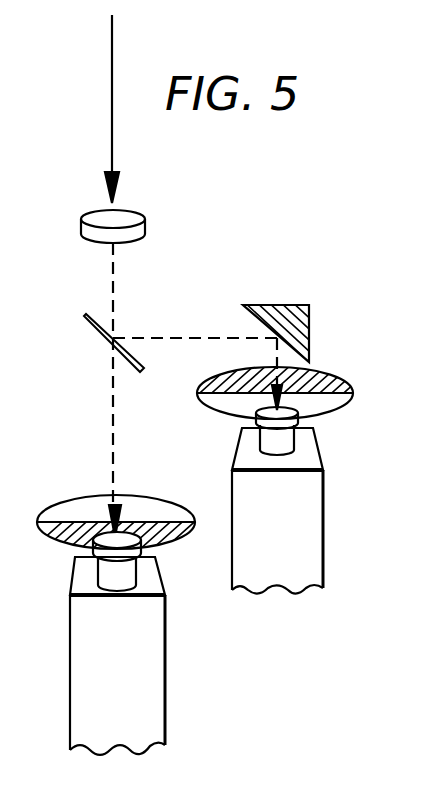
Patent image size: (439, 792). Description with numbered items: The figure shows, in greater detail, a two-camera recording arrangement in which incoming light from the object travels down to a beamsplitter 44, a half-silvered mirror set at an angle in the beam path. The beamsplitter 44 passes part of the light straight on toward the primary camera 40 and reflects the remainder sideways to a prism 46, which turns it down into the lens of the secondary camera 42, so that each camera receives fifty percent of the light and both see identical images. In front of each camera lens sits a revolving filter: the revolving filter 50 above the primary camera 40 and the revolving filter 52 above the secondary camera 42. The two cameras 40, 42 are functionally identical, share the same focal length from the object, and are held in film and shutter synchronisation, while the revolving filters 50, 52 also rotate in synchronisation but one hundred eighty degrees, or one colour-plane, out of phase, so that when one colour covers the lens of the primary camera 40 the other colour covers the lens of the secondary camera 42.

The primary camera 40 is at (145, 657).
The secondary camera 42 is at (292, 578).
The beamsplitter 44 is at (100, 336).
The prism 46 is at (271, 303).
The revolving filter 50 is at (143, 497).
The revolving filter 52 is at (350, 408).